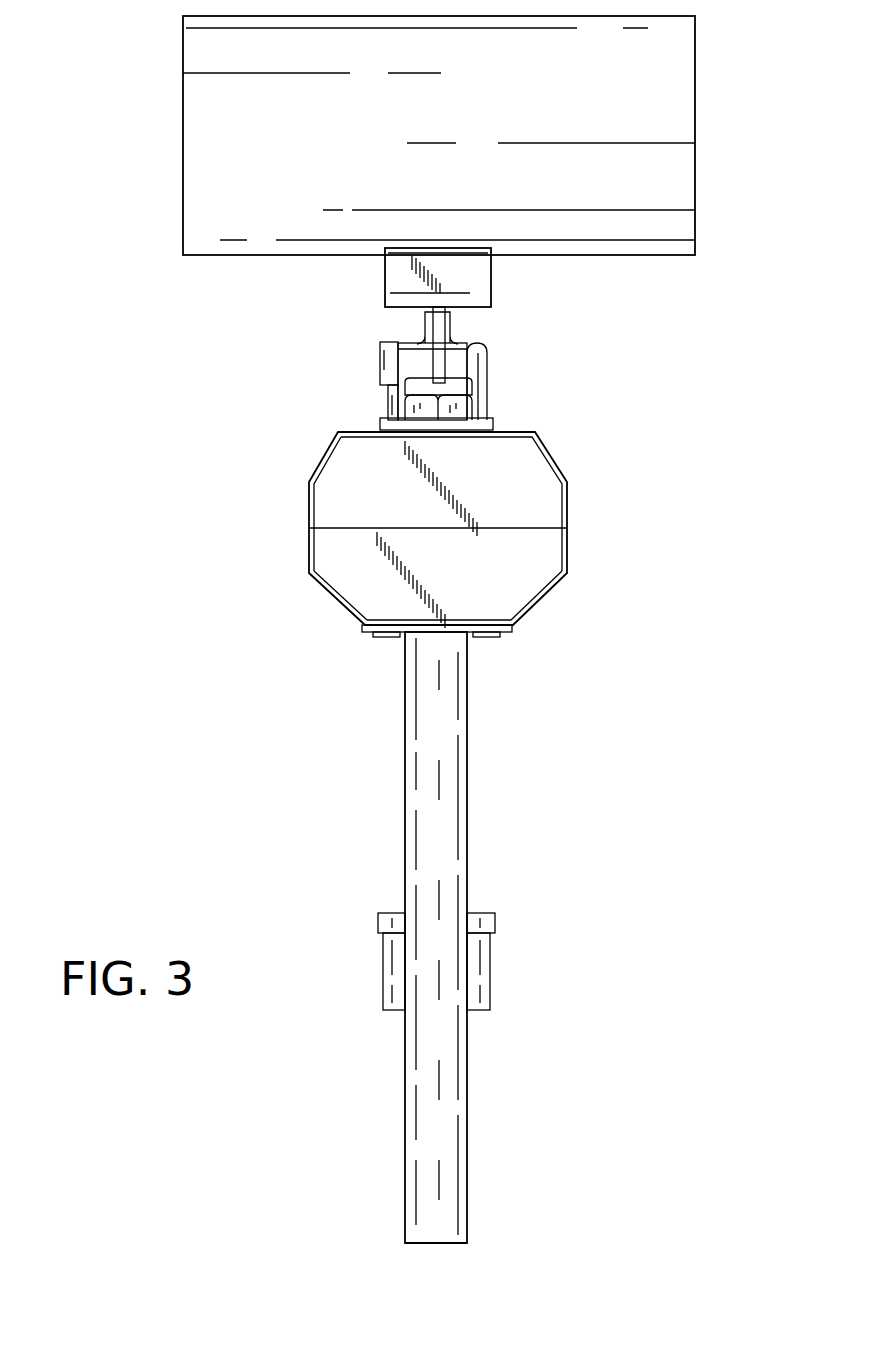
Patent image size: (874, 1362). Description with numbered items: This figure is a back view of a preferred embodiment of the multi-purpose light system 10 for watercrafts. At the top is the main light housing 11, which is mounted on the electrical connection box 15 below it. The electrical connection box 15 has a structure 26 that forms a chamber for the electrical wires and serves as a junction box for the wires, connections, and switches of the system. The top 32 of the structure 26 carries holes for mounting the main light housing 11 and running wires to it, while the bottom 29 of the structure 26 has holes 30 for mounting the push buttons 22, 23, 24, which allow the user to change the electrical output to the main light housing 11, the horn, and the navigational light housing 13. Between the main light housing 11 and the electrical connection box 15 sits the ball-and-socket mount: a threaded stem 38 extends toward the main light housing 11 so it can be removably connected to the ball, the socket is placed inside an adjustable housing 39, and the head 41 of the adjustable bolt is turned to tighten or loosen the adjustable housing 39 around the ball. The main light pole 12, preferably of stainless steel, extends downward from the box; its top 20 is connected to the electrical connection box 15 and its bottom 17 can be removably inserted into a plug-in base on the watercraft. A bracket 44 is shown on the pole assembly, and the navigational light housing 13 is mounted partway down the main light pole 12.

The multi-purpose light system 10 is at (147, 458).
The main light housing 11 is at (695, 117).
The main light pole 12 is at (405, 1115).
The navigational light housing 13 is at (490, 965).
The electrical connection box 15 is at (567, 493).
The bottom of the main light pole 17 is at (445, 1243).
The top of the main light pole 20 is at (430, 635).
The push button 22 is at (327, 600).
The push button 23 is at (448, 635).
The push button 24 is at (550, 600).
The structure 26 is at (438, 530).
The bottom of the structure 29 is at (368, 628).
The holes 30 is at (312, 582).
The top of the structure 32 is at (527, 432).
The threaded stem 38 is at (425, 323).
The adjustable housing 39 is at (487, 398).
The head 41 is at (380, 362).
The body bracket 44 is at (487, 367).